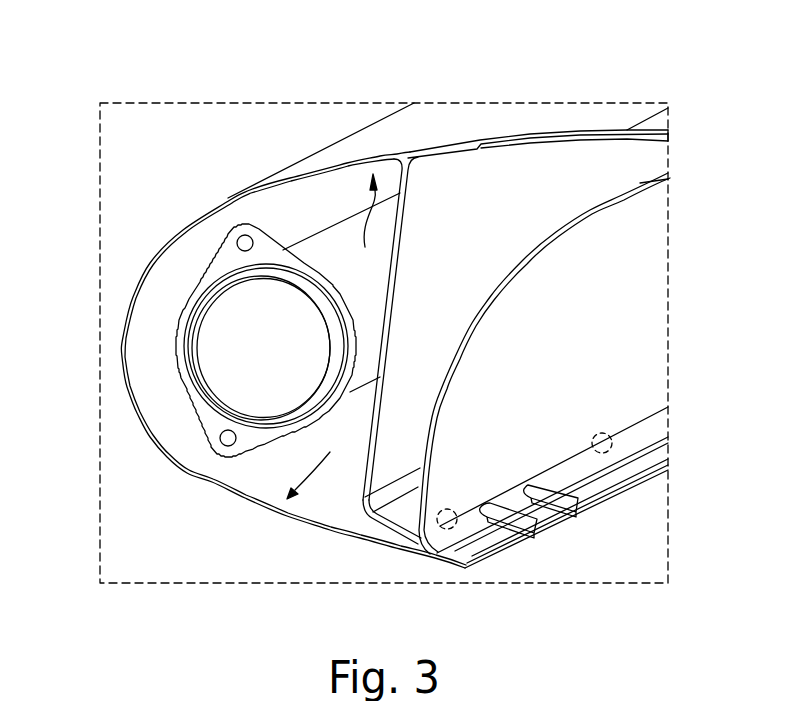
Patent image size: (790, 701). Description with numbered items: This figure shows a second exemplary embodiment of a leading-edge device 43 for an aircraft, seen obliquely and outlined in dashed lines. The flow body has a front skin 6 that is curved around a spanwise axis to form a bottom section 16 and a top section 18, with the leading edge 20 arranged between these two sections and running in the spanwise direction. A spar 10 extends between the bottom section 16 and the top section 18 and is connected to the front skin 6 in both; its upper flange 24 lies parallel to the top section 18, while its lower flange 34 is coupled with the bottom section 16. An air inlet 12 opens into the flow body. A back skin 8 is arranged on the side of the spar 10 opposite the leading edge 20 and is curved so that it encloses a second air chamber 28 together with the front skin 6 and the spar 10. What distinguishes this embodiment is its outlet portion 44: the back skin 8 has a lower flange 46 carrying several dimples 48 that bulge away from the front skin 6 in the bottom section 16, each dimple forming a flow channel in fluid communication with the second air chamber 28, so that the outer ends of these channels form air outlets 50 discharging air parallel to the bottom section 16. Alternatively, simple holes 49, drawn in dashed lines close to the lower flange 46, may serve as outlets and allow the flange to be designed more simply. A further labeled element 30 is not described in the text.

The front skin 6 is at (420, 128).
The back skin 8 is at (520, 337).
The spar 10 is at (380, 418).
The air inlet 12 is at (279, 357).
The bottom section 16 is at (318, 461).
The top section 18 is at (365, 222).
The leading edge 20 is at (110, 340).
The upper flange 24 is at (460, 155).
The second air chamber 28 is at (525, 157).
The mounting flange 30 is at (330, 257).
The lower flange 34 is at (394, 512).
The leading-edge device 43 is at (218, 78).
The outlet portion 44 is at (664, 410).
The lower flange 46 is at (640, 457).
The dimples 48 is at (506, 503).
The holes 49 is at (605, 434).
The air outlets 50 is at (536, 535).